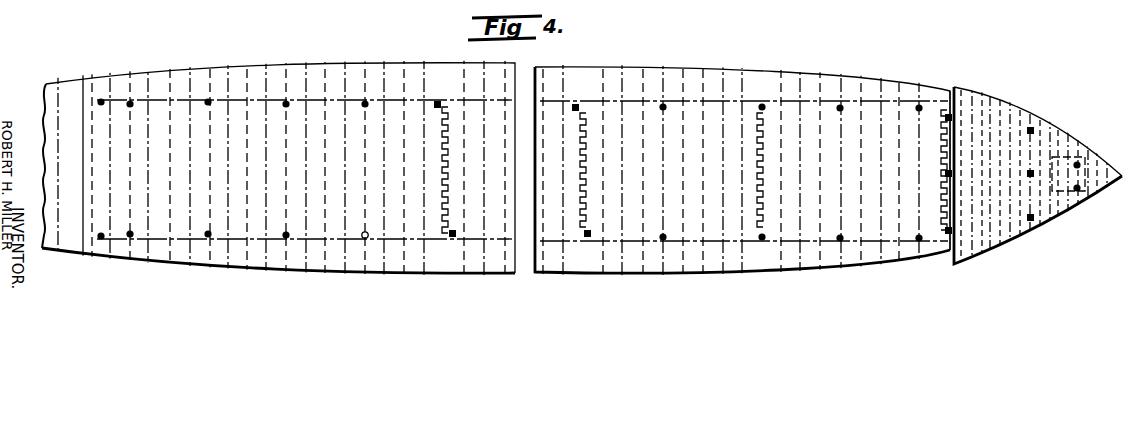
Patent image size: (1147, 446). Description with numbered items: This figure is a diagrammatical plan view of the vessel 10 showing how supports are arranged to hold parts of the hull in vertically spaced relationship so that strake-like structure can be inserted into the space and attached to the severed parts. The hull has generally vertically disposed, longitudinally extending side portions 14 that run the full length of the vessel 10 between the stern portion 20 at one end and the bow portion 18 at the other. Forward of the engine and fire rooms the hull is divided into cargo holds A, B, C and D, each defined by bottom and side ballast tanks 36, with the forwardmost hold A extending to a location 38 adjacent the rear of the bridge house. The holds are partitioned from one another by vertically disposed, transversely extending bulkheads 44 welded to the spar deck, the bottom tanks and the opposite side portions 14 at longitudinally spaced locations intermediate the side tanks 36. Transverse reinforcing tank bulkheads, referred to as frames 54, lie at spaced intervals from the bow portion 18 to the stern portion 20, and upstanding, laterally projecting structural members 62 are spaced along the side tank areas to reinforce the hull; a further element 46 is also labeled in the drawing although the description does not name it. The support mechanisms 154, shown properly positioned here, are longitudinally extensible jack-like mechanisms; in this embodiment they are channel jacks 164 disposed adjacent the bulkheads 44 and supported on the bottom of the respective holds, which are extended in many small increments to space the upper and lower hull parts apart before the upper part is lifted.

The vessel 10 is at (424, 283).
The side portions 14 is at (297, 65).
The bow portion 18 is at (1043, 138).
The stern portion 20 is at (74, 92).
The side ballast tanks 36 is at (690, 84).
The location 38 is at (949, 95).
The bulkheads 44 is at (452, 70).
The lower deck line 46 is at (580, 241).
The frames 54 is at (316, 232).
The structural members 62 is at (742, 90).
The support mechanisms 154 is at (210, 100).
The channel jacks 164 is at (437, 103).